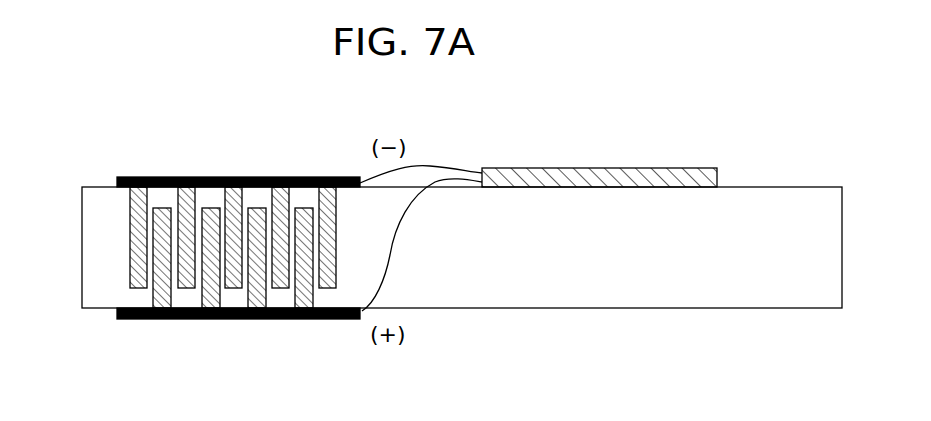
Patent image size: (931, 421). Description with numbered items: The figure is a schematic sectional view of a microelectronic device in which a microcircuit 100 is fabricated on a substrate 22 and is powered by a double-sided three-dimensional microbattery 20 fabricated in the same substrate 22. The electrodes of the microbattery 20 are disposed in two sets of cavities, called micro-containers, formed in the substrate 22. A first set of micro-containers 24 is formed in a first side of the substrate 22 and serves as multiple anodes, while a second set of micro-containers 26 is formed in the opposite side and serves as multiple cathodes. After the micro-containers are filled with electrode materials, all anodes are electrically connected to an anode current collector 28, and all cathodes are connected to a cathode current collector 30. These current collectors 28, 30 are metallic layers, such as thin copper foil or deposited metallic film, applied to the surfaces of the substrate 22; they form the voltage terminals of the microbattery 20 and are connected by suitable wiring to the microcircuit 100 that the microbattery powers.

The microbattery 20 is at (262, 175).
The substrate 22 is at (590, 303).
The first set of micro-containers 24 is at (120, 213).
The second set of micro-containers 26 is at (153, 300).
The anode current collector 28 is at (130, 177).
The cathode current collector 30 is at (147, 320).
The microcircuit 100 is at (717, 168).